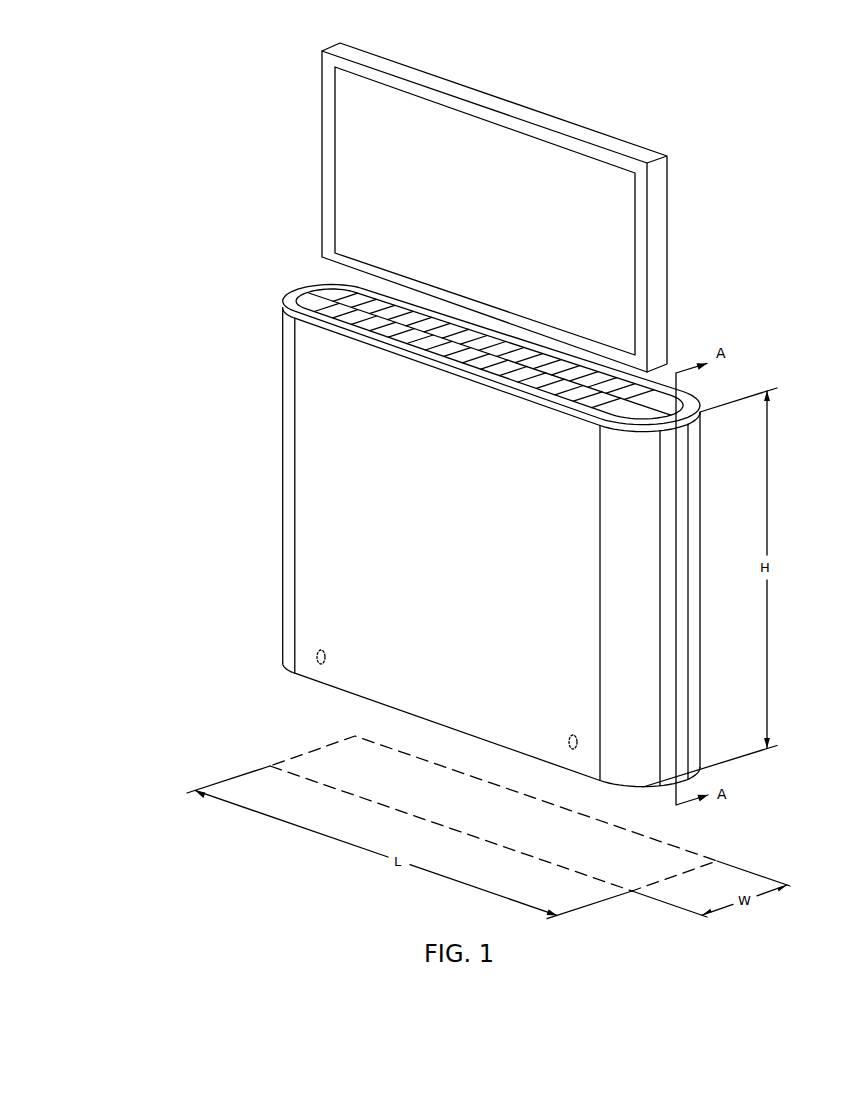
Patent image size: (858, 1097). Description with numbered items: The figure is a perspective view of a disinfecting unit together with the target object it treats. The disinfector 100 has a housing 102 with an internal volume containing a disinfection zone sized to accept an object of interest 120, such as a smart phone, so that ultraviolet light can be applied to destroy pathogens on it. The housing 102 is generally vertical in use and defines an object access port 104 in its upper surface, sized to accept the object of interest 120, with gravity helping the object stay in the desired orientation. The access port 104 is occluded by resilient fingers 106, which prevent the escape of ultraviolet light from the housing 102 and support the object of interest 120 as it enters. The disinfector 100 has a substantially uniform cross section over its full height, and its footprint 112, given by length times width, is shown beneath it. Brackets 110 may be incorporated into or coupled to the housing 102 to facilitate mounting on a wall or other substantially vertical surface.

The disinfector 100 is at (272, 481).
The housing 102 is at (350, 632).
The object access port 104 is at (639, 398).
The resilient fingers 106 is at (327, 298).
The brackets 110 is at (317, 660).
The footprint 112 is at (682, 843).
The object of interest 120 is at (488, 102).